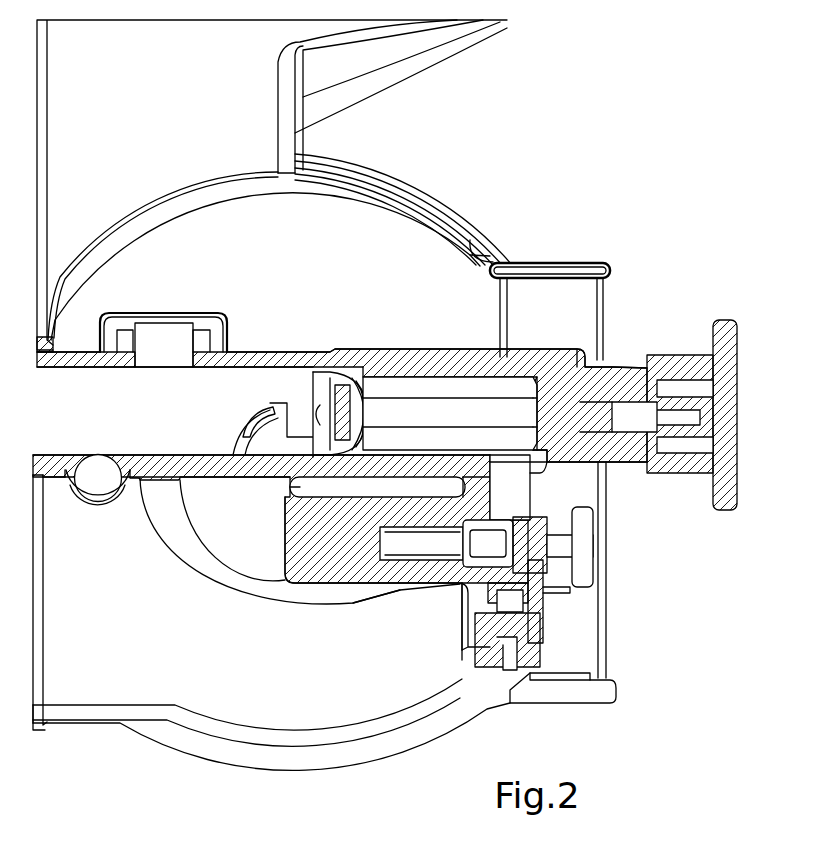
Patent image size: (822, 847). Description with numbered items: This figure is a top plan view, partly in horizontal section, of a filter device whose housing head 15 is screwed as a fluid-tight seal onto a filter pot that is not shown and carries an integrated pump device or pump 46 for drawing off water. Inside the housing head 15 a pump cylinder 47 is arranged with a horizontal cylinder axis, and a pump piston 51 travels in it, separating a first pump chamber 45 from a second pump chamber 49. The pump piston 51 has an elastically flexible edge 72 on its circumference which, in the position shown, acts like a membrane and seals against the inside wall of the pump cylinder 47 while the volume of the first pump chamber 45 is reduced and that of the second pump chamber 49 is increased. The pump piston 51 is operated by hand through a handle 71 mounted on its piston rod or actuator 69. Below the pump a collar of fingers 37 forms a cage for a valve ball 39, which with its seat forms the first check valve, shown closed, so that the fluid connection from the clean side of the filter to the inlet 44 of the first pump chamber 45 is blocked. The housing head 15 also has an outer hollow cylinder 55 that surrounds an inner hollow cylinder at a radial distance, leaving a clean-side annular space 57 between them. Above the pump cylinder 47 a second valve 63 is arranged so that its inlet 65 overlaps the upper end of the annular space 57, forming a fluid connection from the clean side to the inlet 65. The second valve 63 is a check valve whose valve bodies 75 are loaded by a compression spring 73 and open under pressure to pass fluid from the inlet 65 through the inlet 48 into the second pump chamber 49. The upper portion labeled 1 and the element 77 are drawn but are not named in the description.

The inlet chute 1 is at (380, 58).
The housing head 15 is at (405, 250).
The pump device 46 is at (522, 306).
The bracket 77 is at (172, 311).
The pump piston 51 is at (335, 376).
The pump cylinder 47 is at (399, 378).
The second pump chamber 49 is at (460, 385).
The inlet 48 is at (517, 457).
The piston rod 69 is at (505, 375).
The handle 71 is at (680, 355).
The first pump chamber 45 is at (315, 392).
The fingers 37 is at (250, 412).
The valve ball 39 is at (268, 448).
The flexible edge 72 is at (373, 432).
The valve bodies 75 is at (488, 515).
The inlet 44 is at (290, 472).
The annular space 57 is at (360, 518).
The outer hollow cylinder 55 is at (370, 534).
The compression spring 73 is at (497, 565).
The inlet 65 is at (395, 562).
The second valve 63 is at (455, 600).